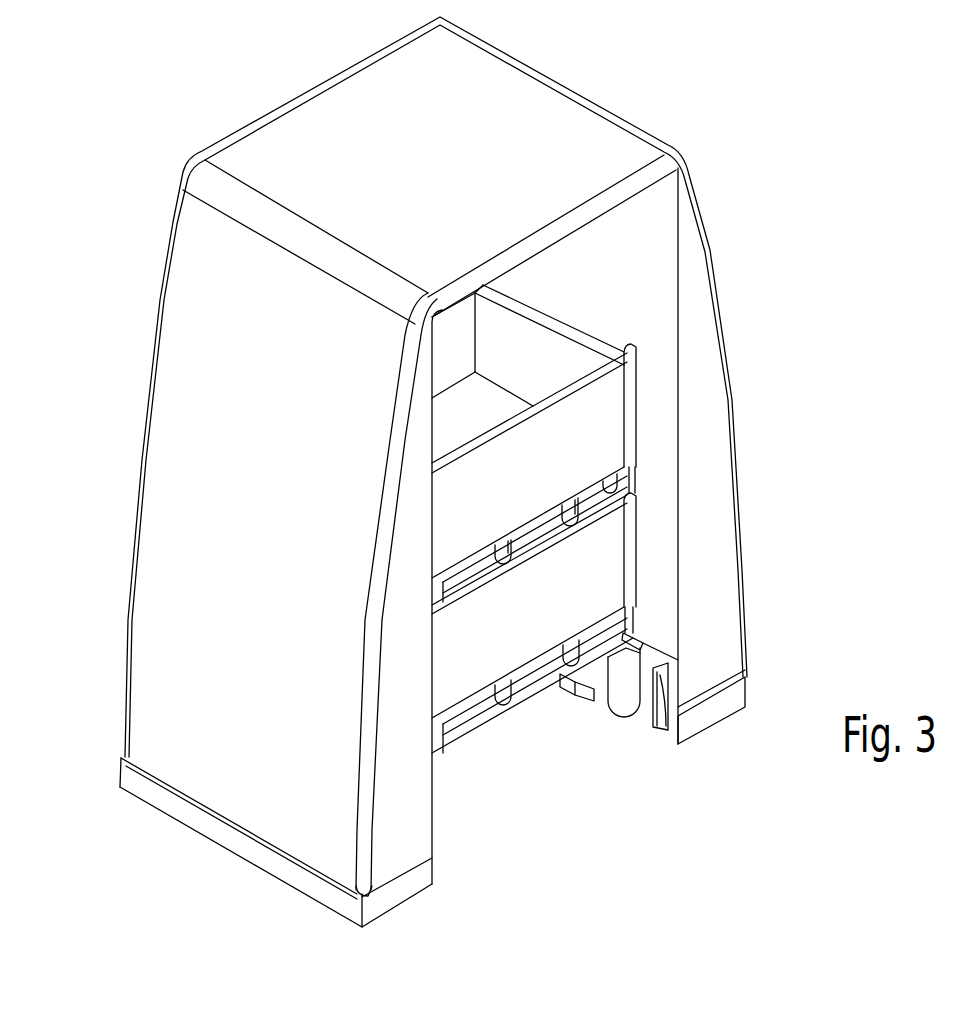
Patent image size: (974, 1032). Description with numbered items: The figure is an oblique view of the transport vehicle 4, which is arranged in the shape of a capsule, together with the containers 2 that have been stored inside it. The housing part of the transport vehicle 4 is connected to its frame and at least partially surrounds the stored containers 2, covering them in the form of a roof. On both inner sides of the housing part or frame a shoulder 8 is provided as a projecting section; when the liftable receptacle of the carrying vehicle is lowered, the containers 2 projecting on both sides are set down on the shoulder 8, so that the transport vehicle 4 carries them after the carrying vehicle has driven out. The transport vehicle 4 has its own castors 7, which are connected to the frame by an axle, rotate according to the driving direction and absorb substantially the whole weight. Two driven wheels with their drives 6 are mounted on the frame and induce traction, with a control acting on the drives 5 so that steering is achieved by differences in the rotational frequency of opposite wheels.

The container 2 is at (577, 447).
The transport vehicle 4 is at (698, 333).
The secondary winding 5 is at (572, 692).
The drive with drive wheels 6 is at (620, 720).
The castors 7 is at (661, 733).
The shoulder 8 is at (637, 647).